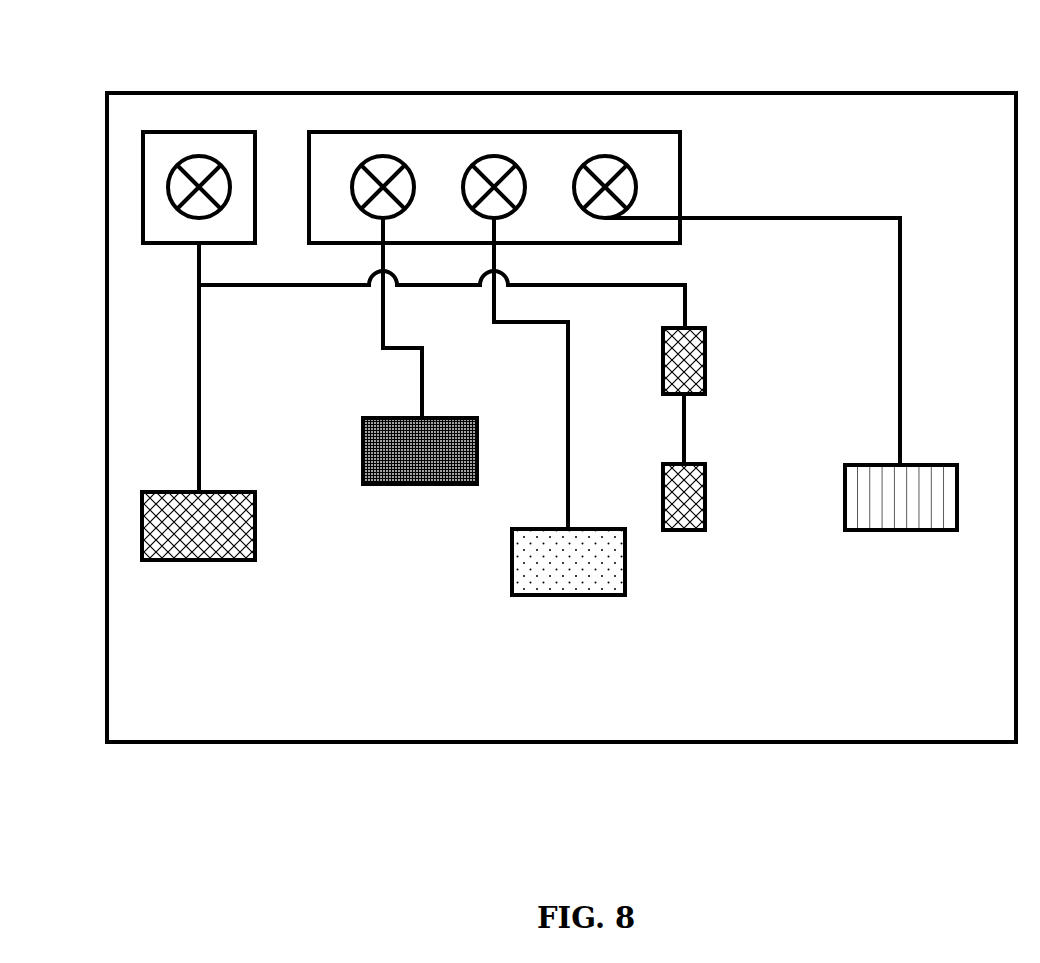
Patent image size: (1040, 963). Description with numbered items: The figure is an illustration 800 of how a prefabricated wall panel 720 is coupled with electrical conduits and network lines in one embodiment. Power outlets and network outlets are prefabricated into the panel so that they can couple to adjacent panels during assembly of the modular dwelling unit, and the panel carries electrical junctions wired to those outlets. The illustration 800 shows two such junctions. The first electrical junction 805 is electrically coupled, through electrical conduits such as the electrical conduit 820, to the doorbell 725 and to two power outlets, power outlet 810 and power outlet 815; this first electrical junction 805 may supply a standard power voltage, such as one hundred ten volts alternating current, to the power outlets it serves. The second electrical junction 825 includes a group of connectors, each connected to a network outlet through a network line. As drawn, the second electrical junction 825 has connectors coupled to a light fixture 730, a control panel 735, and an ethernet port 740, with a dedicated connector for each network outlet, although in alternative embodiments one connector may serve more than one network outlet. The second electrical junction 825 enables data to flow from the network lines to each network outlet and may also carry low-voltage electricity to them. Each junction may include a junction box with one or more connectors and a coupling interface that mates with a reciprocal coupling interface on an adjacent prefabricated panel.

The illustration 800 is at (70, 40).
The prefabricated wall panel 720 is at (548, 62).
The first electrical junction 805 is at (143, 182).
The second electrical junction 825 is at (680, 165).
The electrical conduit 820 is at (199, 362).
The doorbell 725 is at (199, 562).
The light fixture 730 is at (420, 486).
The control panel 735 is at (568, 597).
The power outlet 810 is at (708, 345).
The power outlet 815 is at (708, 482).
The ethernet port 740 is at (897, 531).